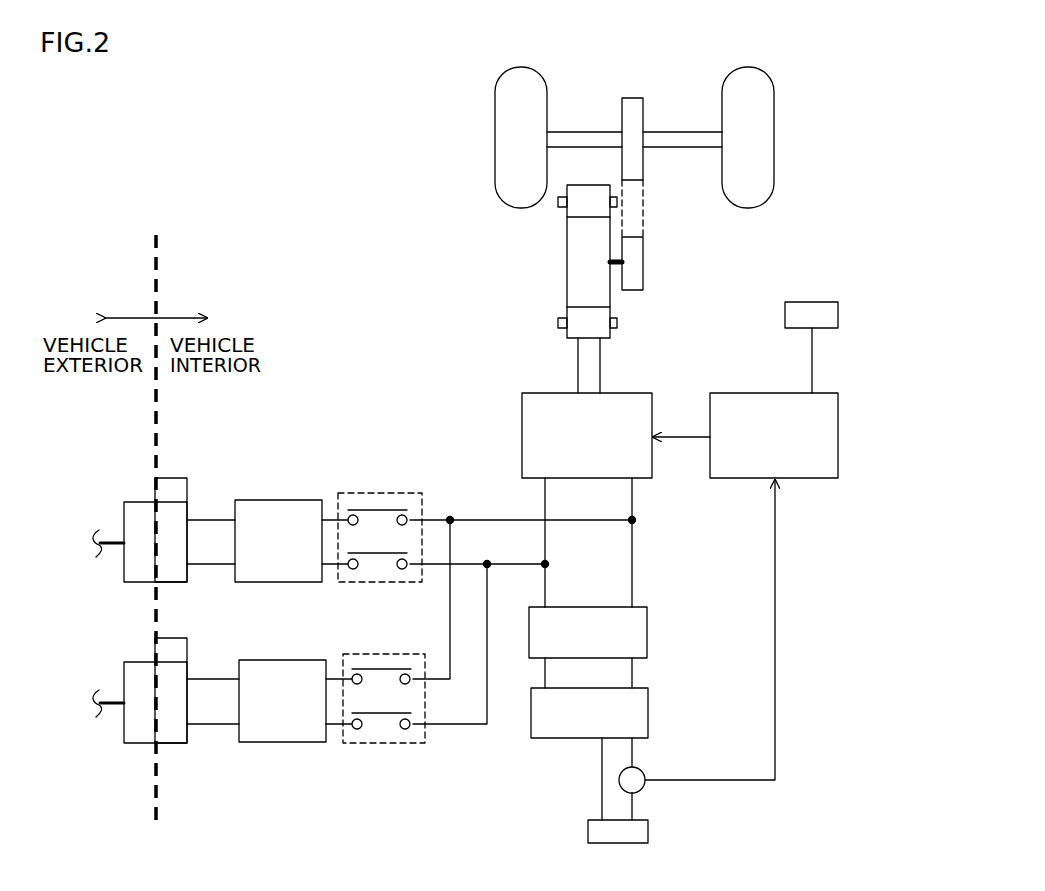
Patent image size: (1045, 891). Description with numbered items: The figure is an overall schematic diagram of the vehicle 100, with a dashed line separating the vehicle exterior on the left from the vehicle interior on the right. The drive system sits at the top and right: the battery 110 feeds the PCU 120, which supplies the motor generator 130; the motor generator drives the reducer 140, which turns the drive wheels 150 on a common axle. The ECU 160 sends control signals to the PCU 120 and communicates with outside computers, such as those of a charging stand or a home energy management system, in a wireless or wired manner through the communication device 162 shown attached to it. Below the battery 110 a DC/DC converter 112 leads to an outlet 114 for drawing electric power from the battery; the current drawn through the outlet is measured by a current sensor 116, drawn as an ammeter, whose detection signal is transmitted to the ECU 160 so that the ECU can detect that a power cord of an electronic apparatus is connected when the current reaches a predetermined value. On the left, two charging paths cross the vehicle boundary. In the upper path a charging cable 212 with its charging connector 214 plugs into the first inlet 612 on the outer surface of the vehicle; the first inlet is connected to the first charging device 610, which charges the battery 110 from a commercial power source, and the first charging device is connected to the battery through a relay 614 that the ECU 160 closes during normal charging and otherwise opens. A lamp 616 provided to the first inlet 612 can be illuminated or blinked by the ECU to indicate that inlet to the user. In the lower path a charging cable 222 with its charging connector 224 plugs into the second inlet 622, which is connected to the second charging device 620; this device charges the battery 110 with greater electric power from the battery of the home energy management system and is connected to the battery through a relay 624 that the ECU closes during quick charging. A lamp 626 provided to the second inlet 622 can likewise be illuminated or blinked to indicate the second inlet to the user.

The vehicle 100 is at (352, 201).
The battery 110 is at (647, 635).
The DC/DC converter 112 is at (648, 718).
The outlet 114 is at (648, 833).
The current sensor 116 is at (645, 768).
The PCU 120 is at (522, 425).
The motor generator 130 is at (567, 262).
The reducer 140 is at (651, 122).
The drive wheels 150 is at (495, 143).
The ECU 160 is at (775, 393).
The communication device 162 is at (818, 302).
The charging cable 212 is at (104, 500).
The charging connector 214 is at (140, 500).
The charging cable 222 is at (103, 690).
The charging connector 224 is at (140, 660).
The first charging device 610 is at (284, 500).
The first inlet 612 is at (190, 508).
The relay 614 is at (380, 493).
The lamp 616 is at (167, 478).
The second charging device 620 is at (287, 660).
The second inlet 622 is at (190, 668).
The relay 624 is at (383, 654).
The lamp 626 is at (167, 638).